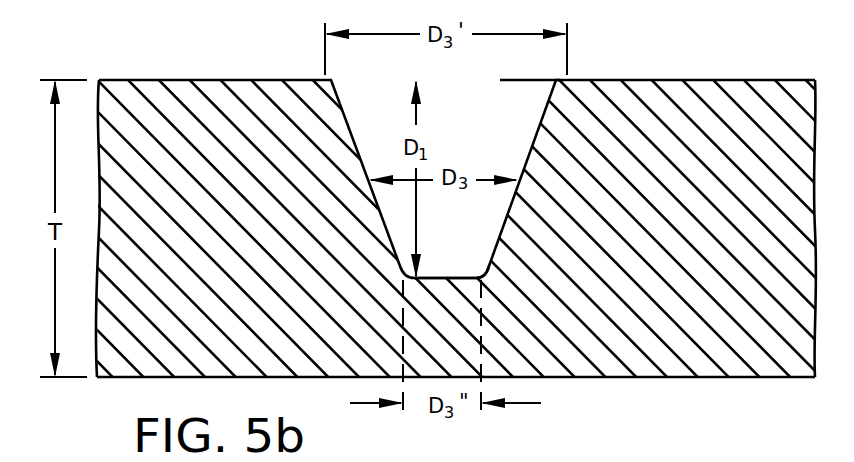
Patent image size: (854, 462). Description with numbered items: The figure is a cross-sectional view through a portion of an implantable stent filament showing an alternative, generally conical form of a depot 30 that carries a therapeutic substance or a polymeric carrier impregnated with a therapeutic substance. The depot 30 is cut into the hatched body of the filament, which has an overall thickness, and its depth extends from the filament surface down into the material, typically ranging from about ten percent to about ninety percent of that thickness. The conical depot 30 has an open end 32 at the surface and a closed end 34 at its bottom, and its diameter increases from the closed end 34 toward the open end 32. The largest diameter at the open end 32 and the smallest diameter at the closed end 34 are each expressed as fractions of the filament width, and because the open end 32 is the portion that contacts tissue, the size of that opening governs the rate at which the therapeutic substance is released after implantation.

The depot 30 is at (490, 127).
The open end 32 is at (536, 79).
The closed end 34 is at (434, 278).